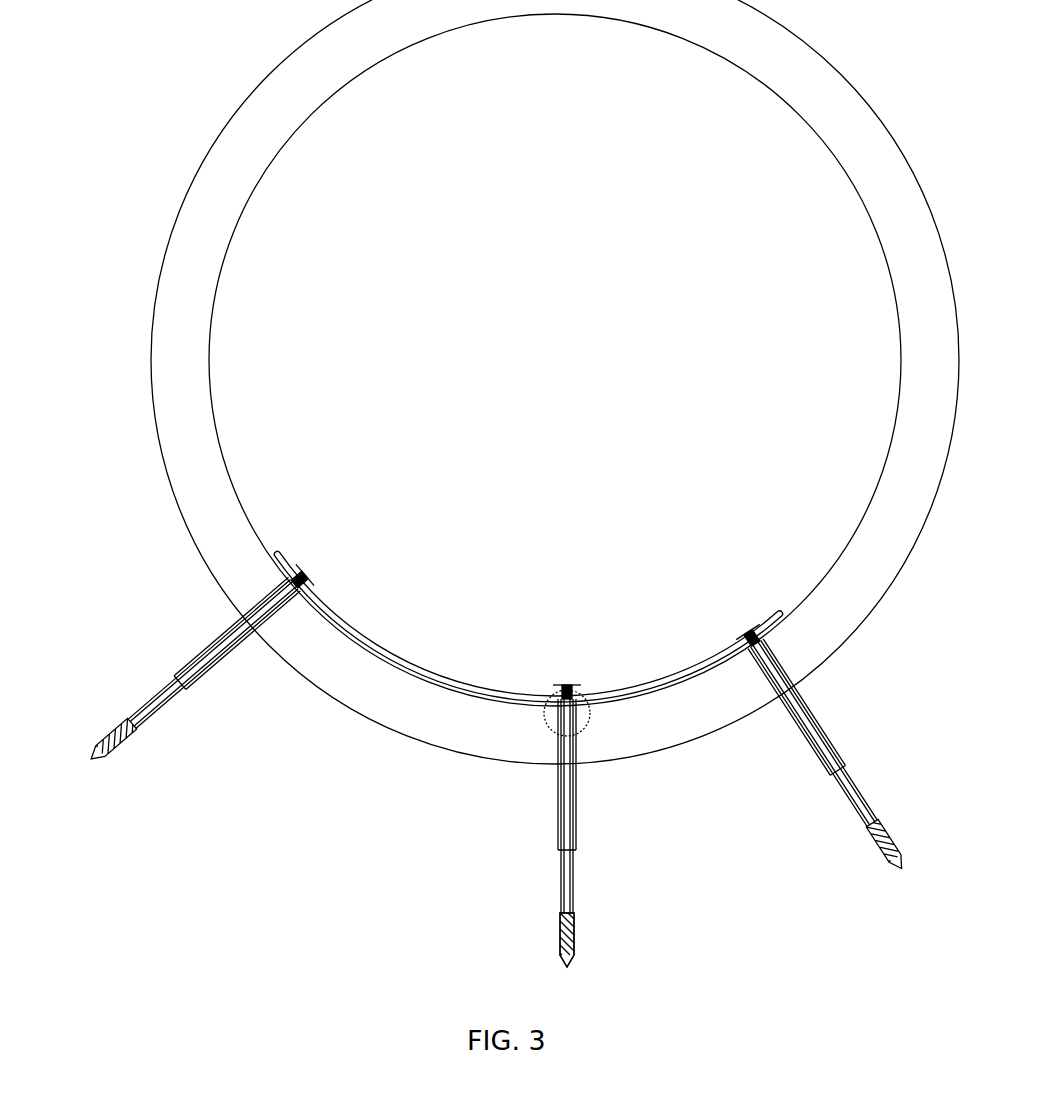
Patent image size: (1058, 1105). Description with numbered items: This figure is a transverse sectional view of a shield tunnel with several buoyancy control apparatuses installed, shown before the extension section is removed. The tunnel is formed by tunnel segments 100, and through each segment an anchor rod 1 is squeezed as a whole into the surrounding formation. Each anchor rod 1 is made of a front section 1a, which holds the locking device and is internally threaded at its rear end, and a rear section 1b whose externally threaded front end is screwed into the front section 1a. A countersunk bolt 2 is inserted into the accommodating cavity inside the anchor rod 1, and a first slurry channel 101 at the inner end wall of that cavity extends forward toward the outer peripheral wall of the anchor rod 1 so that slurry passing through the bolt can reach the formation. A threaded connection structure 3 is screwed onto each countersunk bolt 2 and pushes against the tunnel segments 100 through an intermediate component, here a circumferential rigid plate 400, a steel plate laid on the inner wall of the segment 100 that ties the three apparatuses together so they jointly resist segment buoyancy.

The anchor rod 1 is at (492, 773).
The front section 1a is at (493, 811).
The rear section 1b is at (190, 663).
The countersunk bolt 2 is at (230, 632).
The threaded connection structure 3 is at (309, 570).
The tunnel segment 100 is at (665, 705).
The first slurry channel 101 is at (563, 917).
The circumferential rigid plate 400 is at (397, 660).